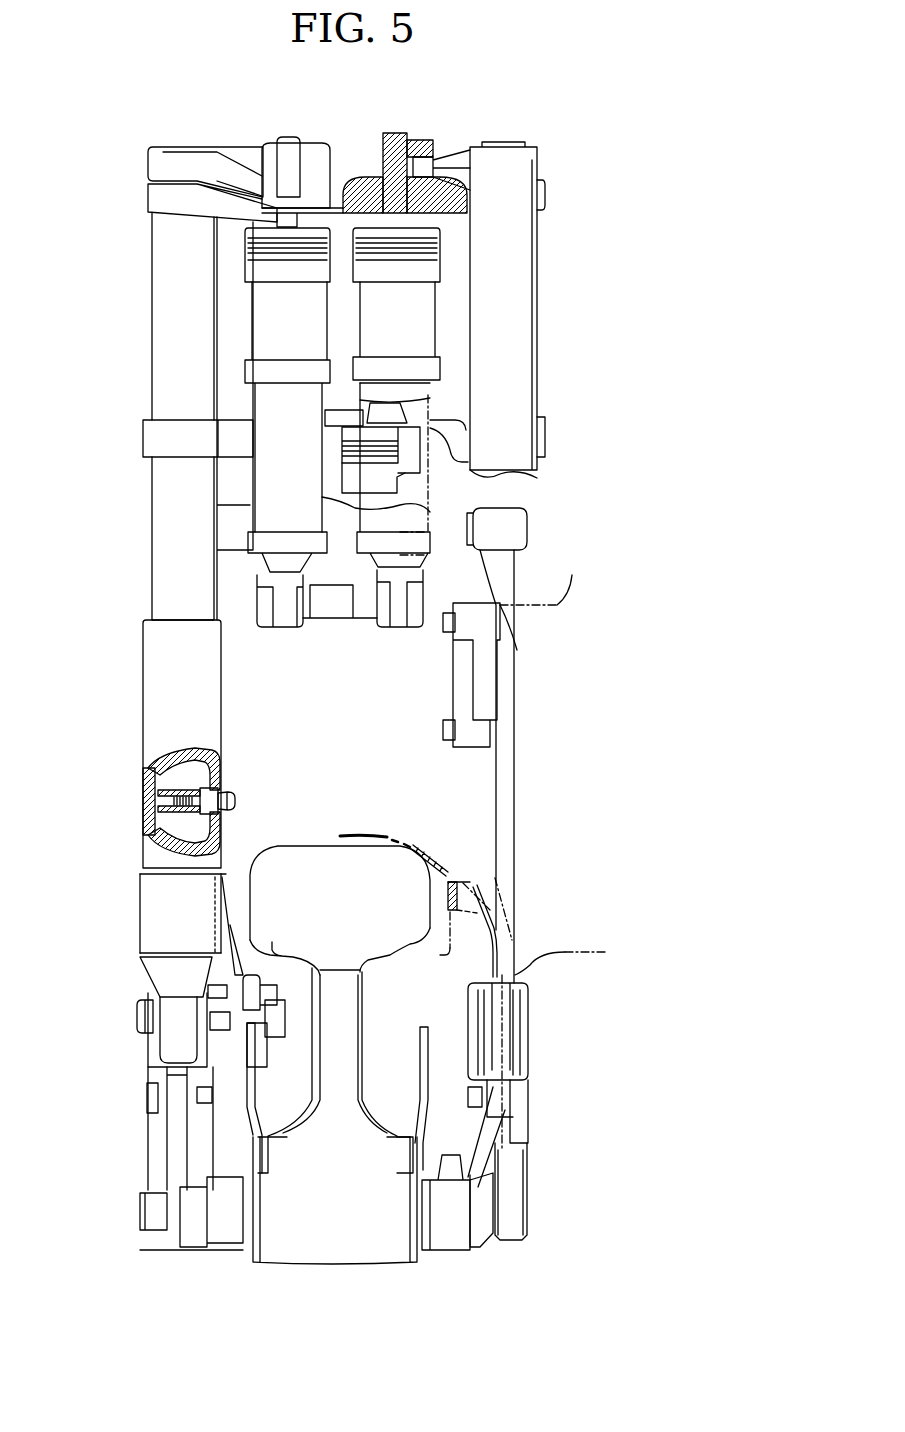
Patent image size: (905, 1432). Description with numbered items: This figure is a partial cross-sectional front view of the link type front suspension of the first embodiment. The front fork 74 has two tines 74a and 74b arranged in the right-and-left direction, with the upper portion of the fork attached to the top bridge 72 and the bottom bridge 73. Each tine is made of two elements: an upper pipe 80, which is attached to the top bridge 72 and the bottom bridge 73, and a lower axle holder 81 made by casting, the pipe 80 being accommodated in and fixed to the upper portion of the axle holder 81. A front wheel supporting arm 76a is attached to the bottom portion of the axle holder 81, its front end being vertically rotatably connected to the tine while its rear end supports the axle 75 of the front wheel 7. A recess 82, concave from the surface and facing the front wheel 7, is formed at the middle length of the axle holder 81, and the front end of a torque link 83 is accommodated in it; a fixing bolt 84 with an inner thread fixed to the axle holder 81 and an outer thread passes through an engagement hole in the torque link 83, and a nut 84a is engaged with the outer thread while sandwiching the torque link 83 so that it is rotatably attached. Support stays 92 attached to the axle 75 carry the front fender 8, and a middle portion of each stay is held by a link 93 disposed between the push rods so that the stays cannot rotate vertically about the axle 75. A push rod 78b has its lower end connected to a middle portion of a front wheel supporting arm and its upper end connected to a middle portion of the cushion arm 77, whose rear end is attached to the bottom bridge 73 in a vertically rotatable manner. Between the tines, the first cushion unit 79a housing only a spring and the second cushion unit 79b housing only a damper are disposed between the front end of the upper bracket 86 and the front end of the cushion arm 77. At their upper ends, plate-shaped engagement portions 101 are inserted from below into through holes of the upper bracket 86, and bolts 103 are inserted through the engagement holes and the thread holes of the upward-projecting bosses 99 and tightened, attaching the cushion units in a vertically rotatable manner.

The front wheel 7 is at (325, 845).
The front fender 8 is at (400, 817).
The top bridge 72 is at (160, 165).
The bottom bridge 73 is at (145, 442).
The front fork 74 is at (147, 277).
The tine 74a is at (150, 372).
The tine 74b is at (507, 370).
The axle 75 is at (450, 1237).
The front wheel supporting arm 76a is at (155, 1162).
The cushion arm 77 is at (338, 605).
The push rod 78b is at (505, 817).
The first cushion unit 79a is at (250, 320).
The second cushion unit 79b is at (425, 295).
The pipe 80 is at (143, 555).
The axle holder 81 is at (148, 660).
The recess 82 is at (215, 778).
The torque link 83 is at (232, 945).
The fixing bolt 84 is at (235, 800).
The nut 84a is at (235, 812).
The upper bracket 86 is at (542, 188).
The support stay 92 is at (556, 762).
The link 93 is at (455, 685).
The boss 99 is at (263, 145).
The engagement portion 101 is at (287, 143).
The bolt 103 is at (420, 162).